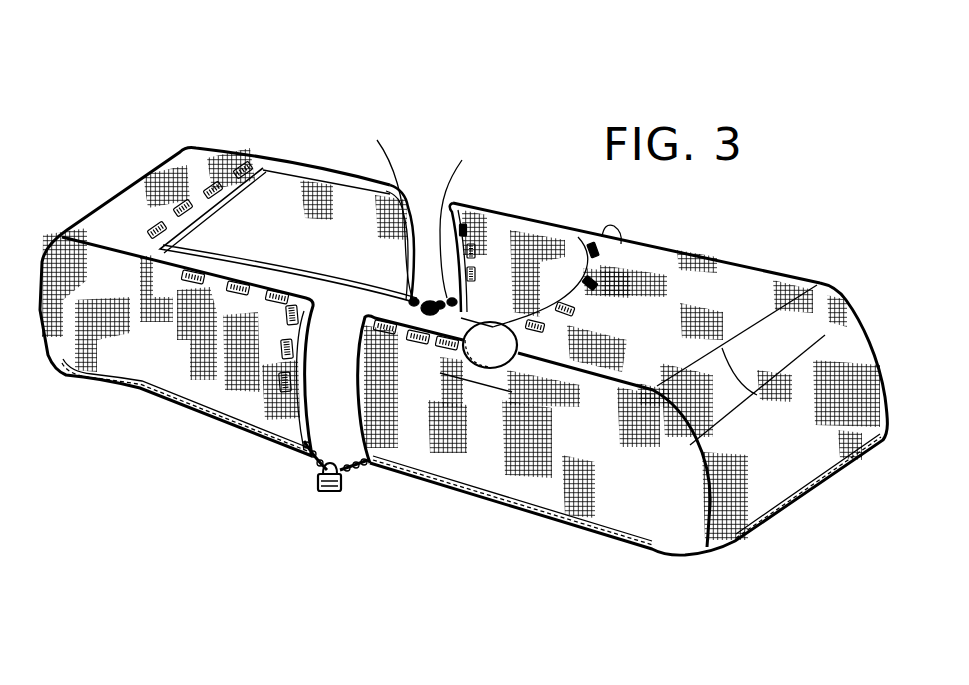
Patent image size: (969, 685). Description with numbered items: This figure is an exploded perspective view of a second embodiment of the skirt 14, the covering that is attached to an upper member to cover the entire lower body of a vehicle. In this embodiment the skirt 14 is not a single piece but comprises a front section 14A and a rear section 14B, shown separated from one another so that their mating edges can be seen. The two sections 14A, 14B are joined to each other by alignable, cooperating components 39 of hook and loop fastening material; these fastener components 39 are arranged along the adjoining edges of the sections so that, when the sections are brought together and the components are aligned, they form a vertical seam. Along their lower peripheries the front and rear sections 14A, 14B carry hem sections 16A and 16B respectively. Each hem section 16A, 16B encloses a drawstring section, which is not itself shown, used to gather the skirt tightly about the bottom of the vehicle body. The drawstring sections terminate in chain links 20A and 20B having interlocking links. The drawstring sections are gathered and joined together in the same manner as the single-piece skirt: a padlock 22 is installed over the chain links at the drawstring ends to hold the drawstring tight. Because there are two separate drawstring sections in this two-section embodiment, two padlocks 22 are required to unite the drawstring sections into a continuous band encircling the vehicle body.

The skirt 14 is at (572, 118).
The front section 14A is at (298, 127).
The rear section 14B is at (747, 253).
The hem section 16A is at (133, 392).
The hem section 16B is at (668, 557).
The chain links 20A is at (272, 568).
The chain links 20B is at (397, 535).
The padlock 22 is at (432, 300).
The cooperating components of hook and loop fastening material 39 is at (471, 262).